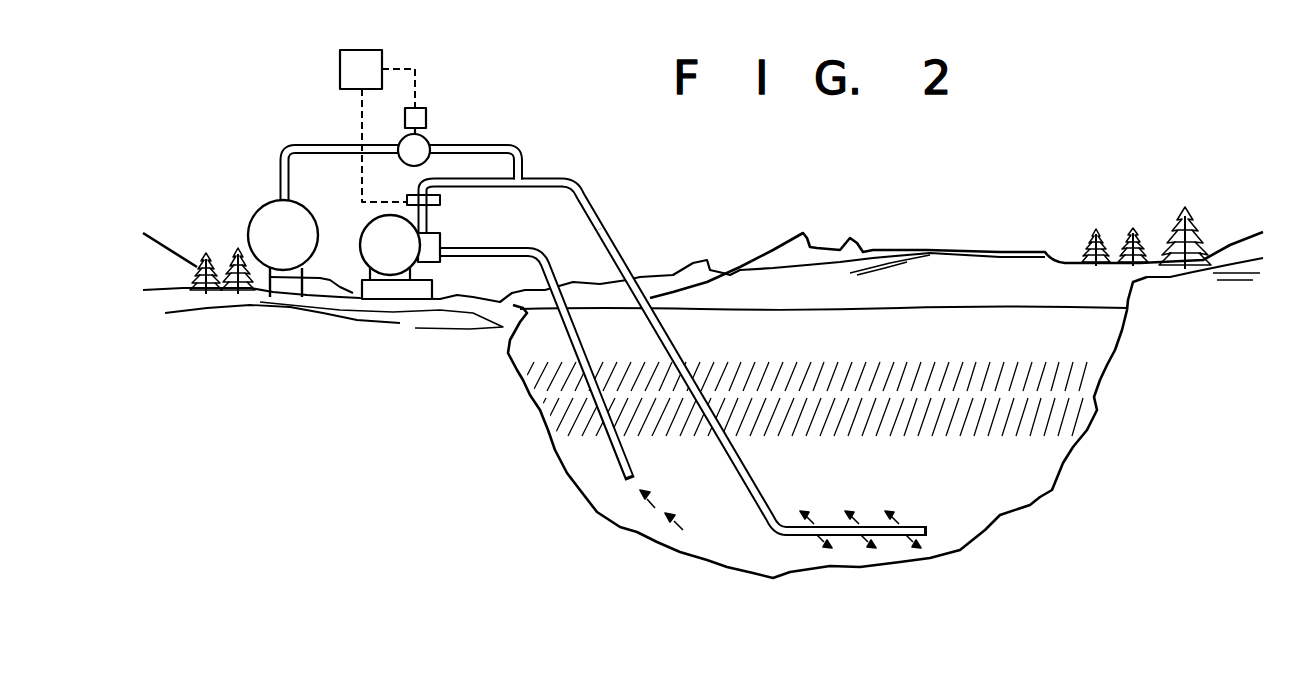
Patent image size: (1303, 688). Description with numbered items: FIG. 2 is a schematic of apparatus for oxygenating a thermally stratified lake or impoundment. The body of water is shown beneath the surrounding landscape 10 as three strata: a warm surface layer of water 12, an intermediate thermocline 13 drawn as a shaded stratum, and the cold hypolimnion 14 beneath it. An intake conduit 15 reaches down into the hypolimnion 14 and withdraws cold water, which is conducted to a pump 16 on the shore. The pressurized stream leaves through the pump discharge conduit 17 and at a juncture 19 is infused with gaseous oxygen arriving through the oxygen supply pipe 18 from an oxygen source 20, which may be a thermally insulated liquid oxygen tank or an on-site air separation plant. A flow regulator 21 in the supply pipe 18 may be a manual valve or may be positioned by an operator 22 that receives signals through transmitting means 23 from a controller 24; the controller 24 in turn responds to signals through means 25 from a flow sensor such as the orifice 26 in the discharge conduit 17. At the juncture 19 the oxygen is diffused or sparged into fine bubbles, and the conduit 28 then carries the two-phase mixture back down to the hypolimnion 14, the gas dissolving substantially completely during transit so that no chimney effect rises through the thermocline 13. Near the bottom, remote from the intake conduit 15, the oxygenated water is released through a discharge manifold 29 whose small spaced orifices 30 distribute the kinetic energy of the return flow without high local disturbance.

The ground surface / landscape 10 is at (918, 283).
The warm surface layer of water 12 is at (1083, 341).
The thermocline 13 is at (1063, 410).
The hypolimnion 14 is at (1000, 483).
The intake conduit 15 is at (617, 456).
The pump 16 is at (360, 243).
The pump discharge conduit 17 is at (458, 186).
The oxygen supply pipe 18 is at (515, 146).
The juncture 19 is at (525, 180).
The oxygen source 20 is at (255, 212).
The flow regulator 21 is at (431, 139).
The operator 22 is at (422, 108).
The transmitting means 23 is at (415, 83).
The controller 24 is at (362, 50).
The signal means 25 is at (358, 128).
The orifice 26 is at (411, 194).
The conduit 28 is at (625, 236).
The discharge manifold 29 is at (845, 536).
The orifices 30 is at (815, 536).